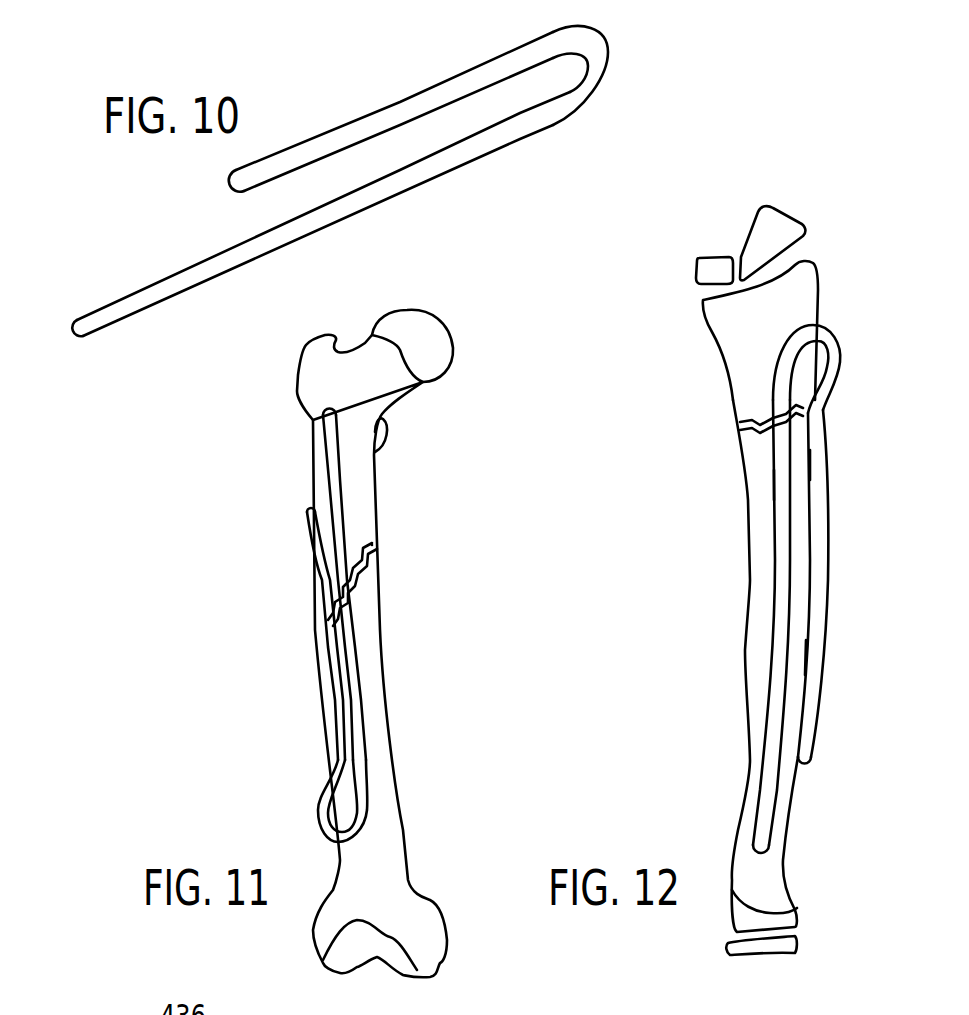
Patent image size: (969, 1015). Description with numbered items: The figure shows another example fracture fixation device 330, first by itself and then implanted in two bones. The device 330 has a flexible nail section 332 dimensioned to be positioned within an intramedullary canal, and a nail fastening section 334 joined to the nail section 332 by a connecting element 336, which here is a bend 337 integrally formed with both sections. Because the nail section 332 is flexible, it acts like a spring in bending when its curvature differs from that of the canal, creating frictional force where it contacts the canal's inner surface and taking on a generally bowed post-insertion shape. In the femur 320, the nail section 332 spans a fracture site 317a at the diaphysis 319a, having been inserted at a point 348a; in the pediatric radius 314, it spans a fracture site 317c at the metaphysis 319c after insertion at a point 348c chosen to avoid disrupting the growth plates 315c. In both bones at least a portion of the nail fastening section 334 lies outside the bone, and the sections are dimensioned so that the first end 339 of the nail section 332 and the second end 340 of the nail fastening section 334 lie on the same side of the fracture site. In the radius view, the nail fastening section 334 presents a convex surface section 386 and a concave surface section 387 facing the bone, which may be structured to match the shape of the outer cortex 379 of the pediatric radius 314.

In FIG. 10, the fracture fixation device 330 is at (385, 209).
In FIG. 11, the fracture fixation device 330 is at (355, 629).
In FIG. 12, the fracture fixation device 330 is at (807, 544).
In FIG. 10, the nail section 332 is at (302, 254).
In FIG. 11, the nail section 332 is at (339, 565).
In FIG. 12, the nail section 332 is at (730, 631).
In FIG. 10, the nail fastening section 334 is at (346, 131).
In FIG. 11, the nail fastening section 334 is at (283, 615).
In FIG. 12, the nail fastening section 334 is at (788, 610).
In FIG. 10, the connecting element 336 is at (605, 120).
In FIG. 10, the bend 337 is at (595, 75).
In FIG. 11, the bend 337 is at (374, 824).
In FIG. 12, the bend 337 is at (844, 320).
In FIG. 10, the first end 339 is at (69, 343).
In FIG. 11, the first end 339 is at (324, 413).
In FIG. 12, the first end 339 is at (732, 862).
In FIG. 10, the second end 340 is at (230, 189).
In FIG. 11, the second end 340 is at (311, 510).
In FIG. 12, the second end 340 is at (807, 770).
In FIG. 11, the femur 320 is at (385, 835).
In FIG. 11, the fracture site 317a is at (380, 541).
In FIG. 11, the diaphysis 319a is at (392, 593).
In FIG. 11, the insertion point 348a is at (338, 842).
In FIG. 12, the pediatric radius 314 is at (763, 888).
In FIG. 12, the growth plates 315c is at (795, 934).
In FIG. 12, the fracture site 317c is at (727, 429).
In FIG. 12, the metaphysis 319c is at (710, 364).
In FIG. 12, the insertion point 348c is at (816, 340).
In FIG. 12, the outer cortex 379 is at (774, 485).
In FIG. 12, the convex surface section 386 is at (809, 465).
In FIG. 12, the concave surface section 387 is at (806, 657).